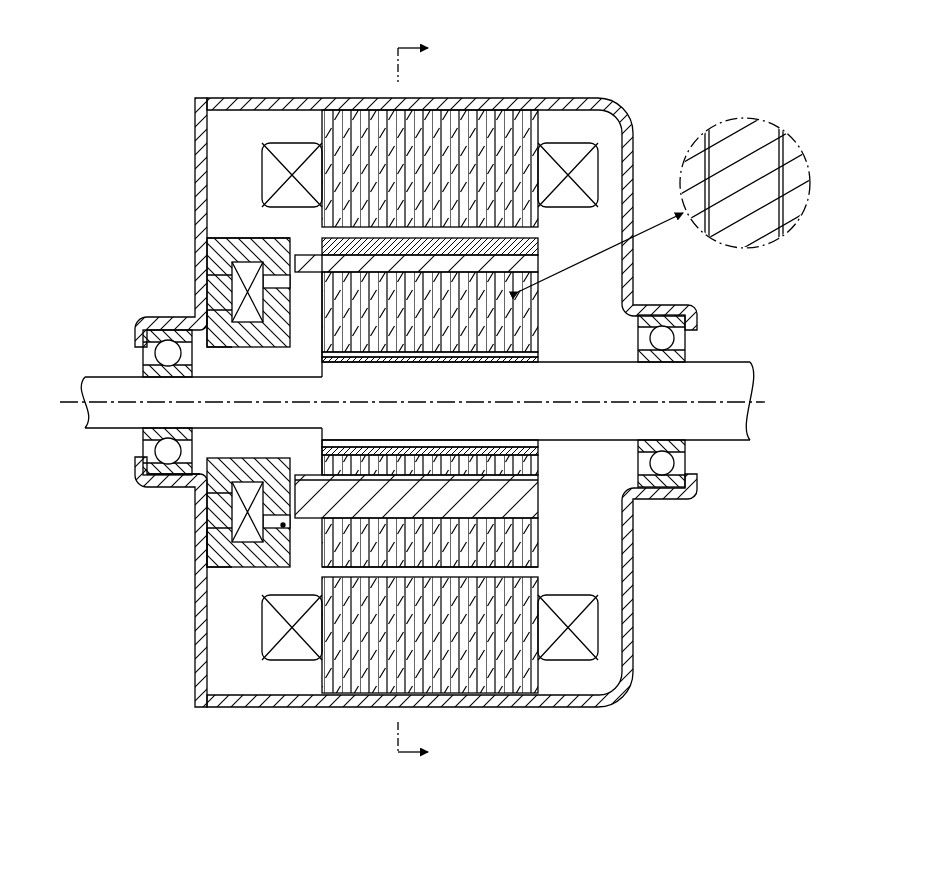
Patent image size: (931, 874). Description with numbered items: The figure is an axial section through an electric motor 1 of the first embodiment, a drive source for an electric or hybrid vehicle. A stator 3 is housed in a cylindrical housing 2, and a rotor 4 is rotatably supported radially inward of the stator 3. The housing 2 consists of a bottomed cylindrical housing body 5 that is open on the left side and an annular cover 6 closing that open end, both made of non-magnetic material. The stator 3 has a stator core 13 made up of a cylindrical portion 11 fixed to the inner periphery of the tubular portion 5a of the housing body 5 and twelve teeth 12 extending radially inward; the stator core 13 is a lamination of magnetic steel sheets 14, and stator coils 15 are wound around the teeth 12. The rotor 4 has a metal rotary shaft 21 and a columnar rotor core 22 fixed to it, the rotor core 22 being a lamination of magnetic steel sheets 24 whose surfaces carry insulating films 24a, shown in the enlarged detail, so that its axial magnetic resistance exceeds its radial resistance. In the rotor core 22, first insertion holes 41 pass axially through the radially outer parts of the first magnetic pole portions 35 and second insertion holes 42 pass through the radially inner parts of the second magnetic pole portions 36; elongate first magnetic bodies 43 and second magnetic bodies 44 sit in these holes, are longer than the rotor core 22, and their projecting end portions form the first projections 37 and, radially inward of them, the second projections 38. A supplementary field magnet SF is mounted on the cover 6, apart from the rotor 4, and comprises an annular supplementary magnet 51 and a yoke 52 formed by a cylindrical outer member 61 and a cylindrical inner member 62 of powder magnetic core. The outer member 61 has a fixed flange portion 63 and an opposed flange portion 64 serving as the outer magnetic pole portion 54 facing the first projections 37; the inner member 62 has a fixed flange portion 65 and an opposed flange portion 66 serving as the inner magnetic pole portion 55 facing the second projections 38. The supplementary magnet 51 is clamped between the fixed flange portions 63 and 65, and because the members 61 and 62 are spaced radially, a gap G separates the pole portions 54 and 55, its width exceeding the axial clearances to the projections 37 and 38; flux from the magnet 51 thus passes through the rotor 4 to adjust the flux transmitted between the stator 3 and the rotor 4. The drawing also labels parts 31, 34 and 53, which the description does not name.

The electric motor 1 is at (86, 98).
The housing 2 is at (196, 100).
The stator 3 is at (328, 108).
The rotor 4 is at (320, 245).
The housing body 5 is at (623, 107).
The tubular portion 5a is at (233, 98).
The cover 6 is at (195, 140).
The cylindrical portion 11 is at (352, 108).
The teeth 12 is at (458, 160).
The stator core 13 is at (496, 108).
The magnetic steel sheets 14 is at (430, 400).
The stator coils 15 is at (586, 150).
The rotary shaft 21 is at (104, 377).
The rotor core 22 is at (525, 566).
The magnetic steel sheets 24 is at (730, 122).
The insulating films 24a is at (707, 130).
The shaft portion 31 is at (520, 364).
The end ring 34 is at (537, 356).
The first magnetic pole portions 35 is at (520, 306).
The second magnetic pole portions 36 is at (520, 530).
The first projections 37 is at (324, 372).
The second projections 38 is at (324, 432).
The first insertion holes 41 is at (540, 252).
The second insertion holes 42 is at (540, 478).
The first magnetic bodies 43 is at (541, 258).
The second magnetic bodies 44 is at (540, 506).
The supplementary magnet 51 is at (232, 300).
The yoke 52 is at (135, 492).
The first resolver stator core 53 is at (207, 272).
The outer magnetic pole portion 54 is at (280, 270).
The inner magnetic pole portion 55 is at (273, 513).
The outer member 61 is at (207, 550).
The inner member 62 is at (193, 490).
The fixed flange portion 63 is at (217, 540).
The opposed flange portion 64 is at (247, 292).
The fixed flange portion 65 is at (217, 317).
The opposed flange portion 66 is at (247, 512).
The gap G is at (286, 527).
The supplementary field magnet SF is at (236, 235).